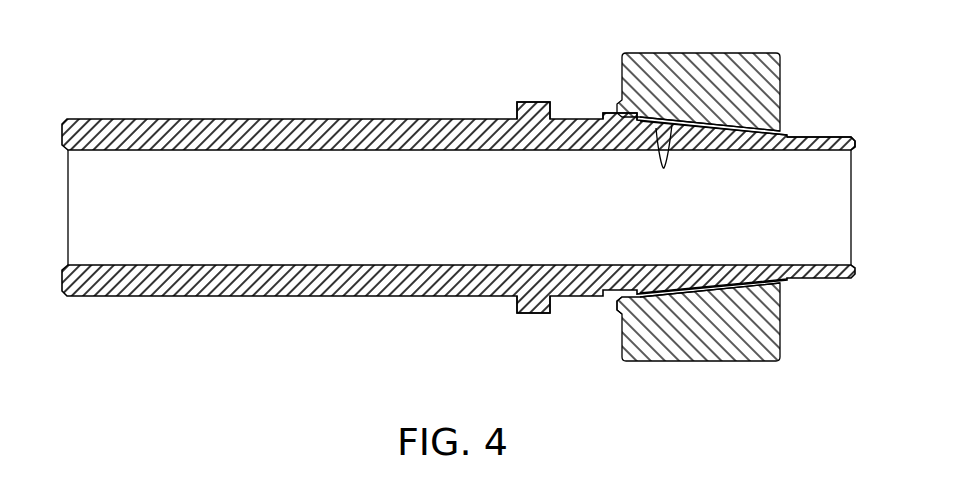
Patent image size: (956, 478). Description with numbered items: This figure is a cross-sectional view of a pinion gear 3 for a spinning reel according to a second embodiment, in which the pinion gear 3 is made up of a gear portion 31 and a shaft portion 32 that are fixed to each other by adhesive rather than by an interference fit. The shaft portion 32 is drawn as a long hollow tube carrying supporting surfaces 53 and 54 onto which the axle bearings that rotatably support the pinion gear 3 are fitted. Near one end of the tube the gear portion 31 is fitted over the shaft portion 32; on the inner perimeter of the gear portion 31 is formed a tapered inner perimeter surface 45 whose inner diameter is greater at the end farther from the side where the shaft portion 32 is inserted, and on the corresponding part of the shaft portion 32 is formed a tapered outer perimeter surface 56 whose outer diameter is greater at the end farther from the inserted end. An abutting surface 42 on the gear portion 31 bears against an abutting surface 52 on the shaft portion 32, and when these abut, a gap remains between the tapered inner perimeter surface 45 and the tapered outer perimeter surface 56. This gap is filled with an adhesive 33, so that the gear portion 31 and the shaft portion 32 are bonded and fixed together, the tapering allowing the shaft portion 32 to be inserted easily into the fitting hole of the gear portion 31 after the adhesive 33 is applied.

The pinion gear 3 is at (521, 51).
The gear portion 31 is at (714, 53).
The shaft portion 32 is at (326, 135).
The adhesive 33 is at (679, 129).
The abutting surface 42 is at (615, 303).
The tapered inner perimeter surface 45 is at (656, 128).
The abutting surface 52 is at (620, 110).
The supporting surface 53 is at (812, 136).
The supporting surface 54 is at (500, 108).
The tapered outer perimeter surface 56 is at (708, 125).